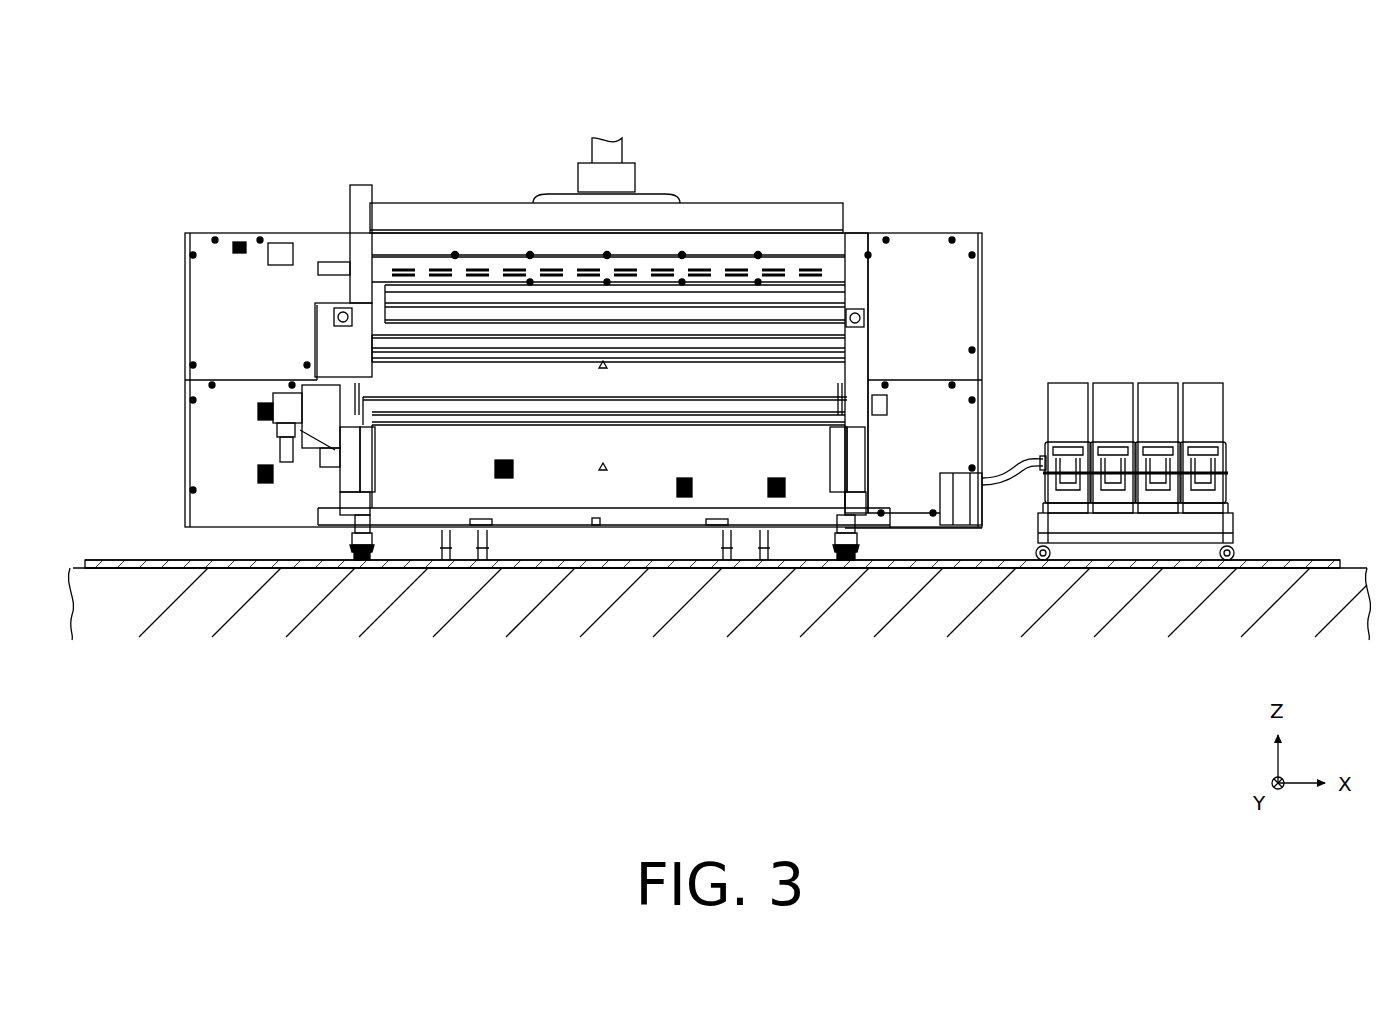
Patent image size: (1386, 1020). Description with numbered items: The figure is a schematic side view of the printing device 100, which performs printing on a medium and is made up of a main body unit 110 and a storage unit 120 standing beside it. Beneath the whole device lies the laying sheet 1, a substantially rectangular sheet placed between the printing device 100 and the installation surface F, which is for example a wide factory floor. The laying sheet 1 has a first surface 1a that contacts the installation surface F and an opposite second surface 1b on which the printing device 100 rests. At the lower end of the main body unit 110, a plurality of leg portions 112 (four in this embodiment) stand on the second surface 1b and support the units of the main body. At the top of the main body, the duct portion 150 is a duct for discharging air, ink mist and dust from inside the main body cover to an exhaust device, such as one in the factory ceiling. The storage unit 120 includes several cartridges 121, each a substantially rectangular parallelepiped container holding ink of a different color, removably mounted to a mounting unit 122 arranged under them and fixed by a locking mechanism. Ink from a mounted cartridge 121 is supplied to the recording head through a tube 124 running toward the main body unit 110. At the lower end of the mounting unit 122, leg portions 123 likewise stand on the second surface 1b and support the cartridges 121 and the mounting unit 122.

The printing device 100 is at (931, 91).
The main body unit 110 is at (878, 164).
The leg portions 112 is at (355, 541).
The duct portion 150 is at (625, 150).
The storage unit 120 is at (1219, 324).
The cartridge 121 is at (1203, 390).
The mounting unit 122 is at (1226, 510).
The leg portions 123 is at (1036, 556).
The tube 124 is at (1013, 468).
The laying sheet 1 is at (1334, 566).
The first surface 1a is at (1250, 569).
The second surface 1b is at (1308, 561).
The installation surface F is at (1361, 572).